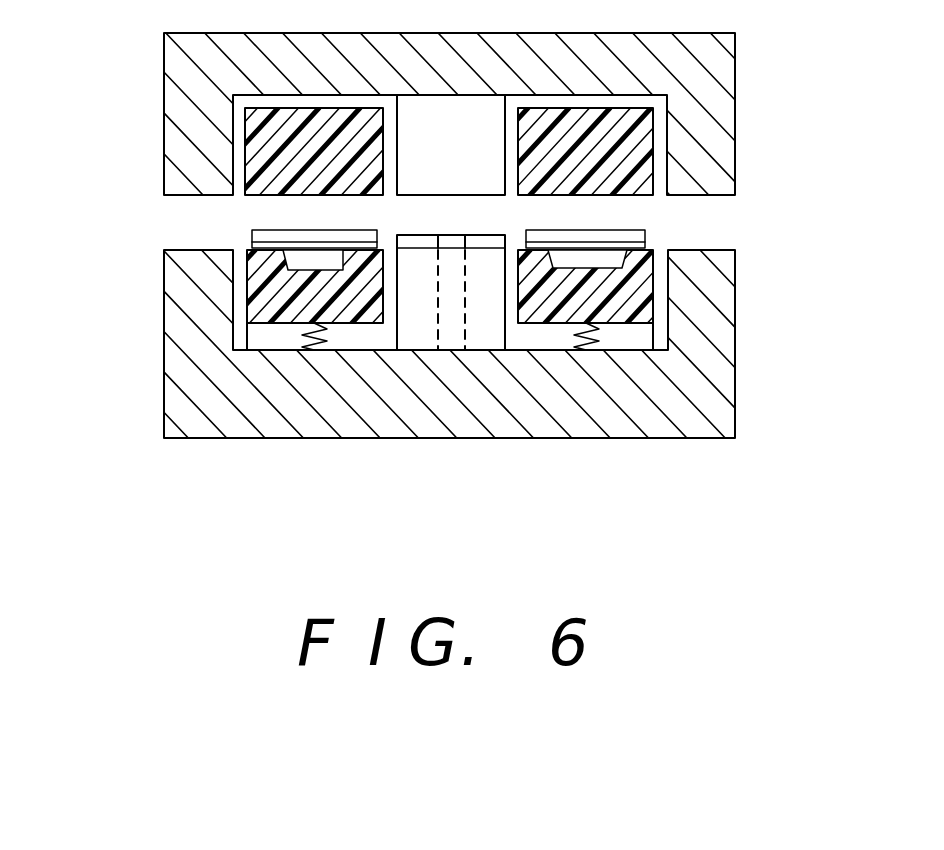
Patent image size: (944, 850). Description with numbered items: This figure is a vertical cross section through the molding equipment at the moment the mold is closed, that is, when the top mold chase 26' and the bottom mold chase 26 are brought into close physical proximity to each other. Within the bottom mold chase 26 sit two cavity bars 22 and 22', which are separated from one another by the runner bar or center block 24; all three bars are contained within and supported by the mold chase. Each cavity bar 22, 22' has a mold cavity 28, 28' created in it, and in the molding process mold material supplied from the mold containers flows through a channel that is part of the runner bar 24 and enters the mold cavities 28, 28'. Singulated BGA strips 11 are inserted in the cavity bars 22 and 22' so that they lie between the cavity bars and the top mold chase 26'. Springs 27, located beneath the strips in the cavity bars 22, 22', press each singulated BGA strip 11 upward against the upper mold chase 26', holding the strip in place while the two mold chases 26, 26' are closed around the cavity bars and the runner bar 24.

The top mold chase 26' is at (437, 114).
The bottom mold chase 26 is at (444, 344).
The singulated BGA strip 11 is at (263, 235).
The mold cavity 28 is at (209, 266).
The mold cavity 28' is at (699, 262).
The cavity bar 22 is at (314, 387).
The cavity bar 22' is at (589, 387).
The spring 27 is at (323, 343).
The runner bar 24 is at (417, 337).